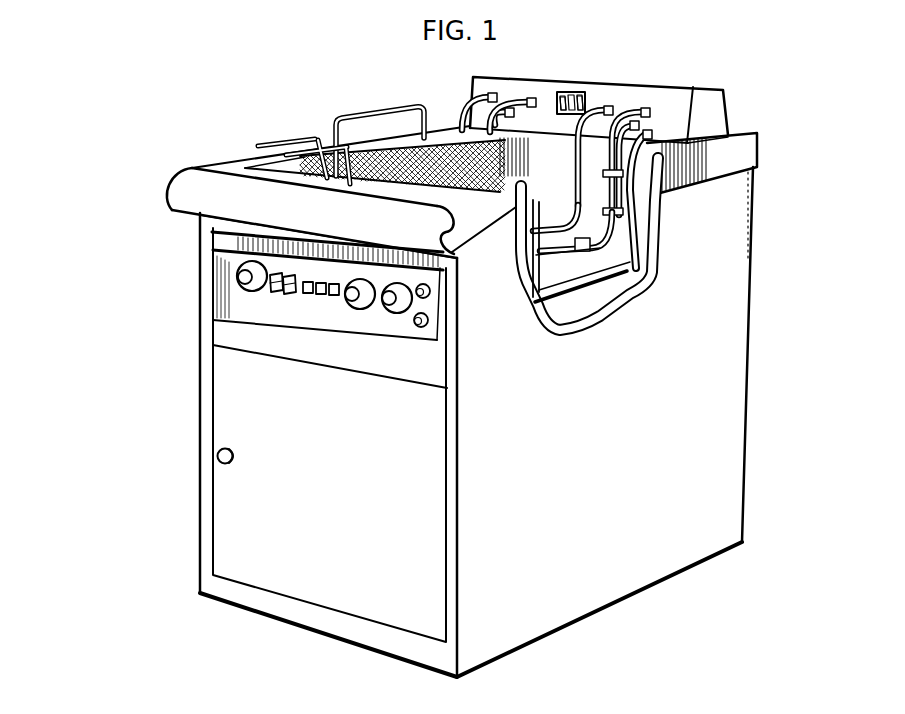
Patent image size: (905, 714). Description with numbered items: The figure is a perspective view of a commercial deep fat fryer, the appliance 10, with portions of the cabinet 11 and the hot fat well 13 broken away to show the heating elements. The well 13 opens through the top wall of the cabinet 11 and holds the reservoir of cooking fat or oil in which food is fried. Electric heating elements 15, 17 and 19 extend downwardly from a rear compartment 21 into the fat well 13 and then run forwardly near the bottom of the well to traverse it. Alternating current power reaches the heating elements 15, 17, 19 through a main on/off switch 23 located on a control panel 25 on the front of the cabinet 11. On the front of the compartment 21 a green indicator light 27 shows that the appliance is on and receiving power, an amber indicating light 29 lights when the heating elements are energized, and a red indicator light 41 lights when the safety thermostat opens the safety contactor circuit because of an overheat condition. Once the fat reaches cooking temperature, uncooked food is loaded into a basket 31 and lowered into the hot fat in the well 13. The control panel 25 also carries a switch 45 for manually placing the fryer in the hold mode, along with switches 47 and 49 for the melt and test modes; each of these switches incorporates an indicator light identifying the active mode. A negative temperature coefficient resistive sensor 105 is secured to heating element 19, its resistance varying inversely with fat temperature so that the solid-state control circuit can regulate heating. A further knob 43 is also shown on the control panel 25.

The appliance 10 is at (182, 368).
The cabinet 11 is at (722, 360).
The well 13 is at (622, 264).
The electric heating element 15 is at (561, 218).
The electric heating element 17 is at (548, 232).
The electric heating element 19 is at (522, 265).
The rear compartment 21 is at (688, 103).
The main on/off switch 23 is at (253, 288).
The control panel 25 is at (400, 315).
The green indicator light 27 is at (570, 96).
The amber indicating light 29 is at (556, 100).
The basket 31 is at (368, 158).
The red indicator light 41 is at (584, 103).
The control knob 43 is at (360, 311).
The switch 45 is at (297, 293).
The switch 47 is at (317, 294).
The switch 49 is at (333, 297).
The negative temperature coefficient resistive sensor 105 is at (573, 265).